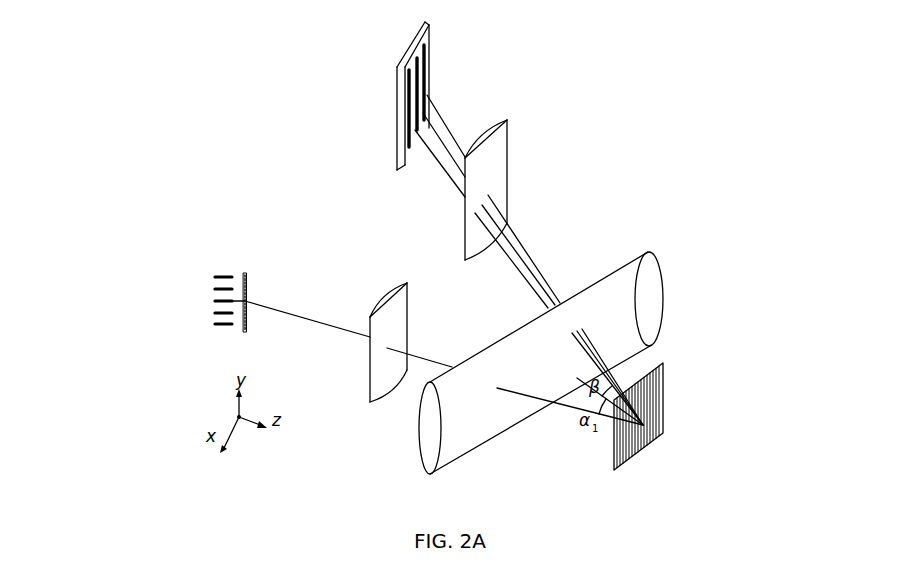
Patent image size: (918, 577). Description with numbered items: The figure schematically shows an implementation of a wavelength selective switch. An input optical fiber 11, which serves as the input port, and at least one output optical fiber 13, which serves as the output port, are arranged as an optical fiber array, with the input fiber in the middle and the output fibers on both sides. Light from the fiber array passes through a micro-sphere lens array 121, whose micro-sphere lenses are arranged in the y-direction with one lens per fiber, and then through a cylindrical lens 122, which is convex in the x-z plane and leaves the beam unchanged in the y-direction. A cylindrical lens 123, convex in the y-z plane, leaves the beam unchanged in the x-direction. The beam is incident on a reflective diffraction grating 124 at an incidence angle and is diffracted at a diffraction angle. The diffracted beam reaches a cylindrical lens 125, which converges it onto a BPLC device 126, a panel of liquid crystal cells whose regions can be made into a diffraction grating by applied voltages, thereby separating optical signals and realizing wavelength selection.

The input optical fiber 11 is at (213, 301).
The output optical fiber 13 is at (213, 325).
The micro-sphere lens array 121 is at (263, 291).
The cylindrical lens 122 is at (374, 338).
The cylindrical lens 123 is at (541, 363).
The diffraction grating 124 is at (668, 416).
The cylindrical lens 125 is at (513, 190).
The BPLC device 126 is at (442, 96).